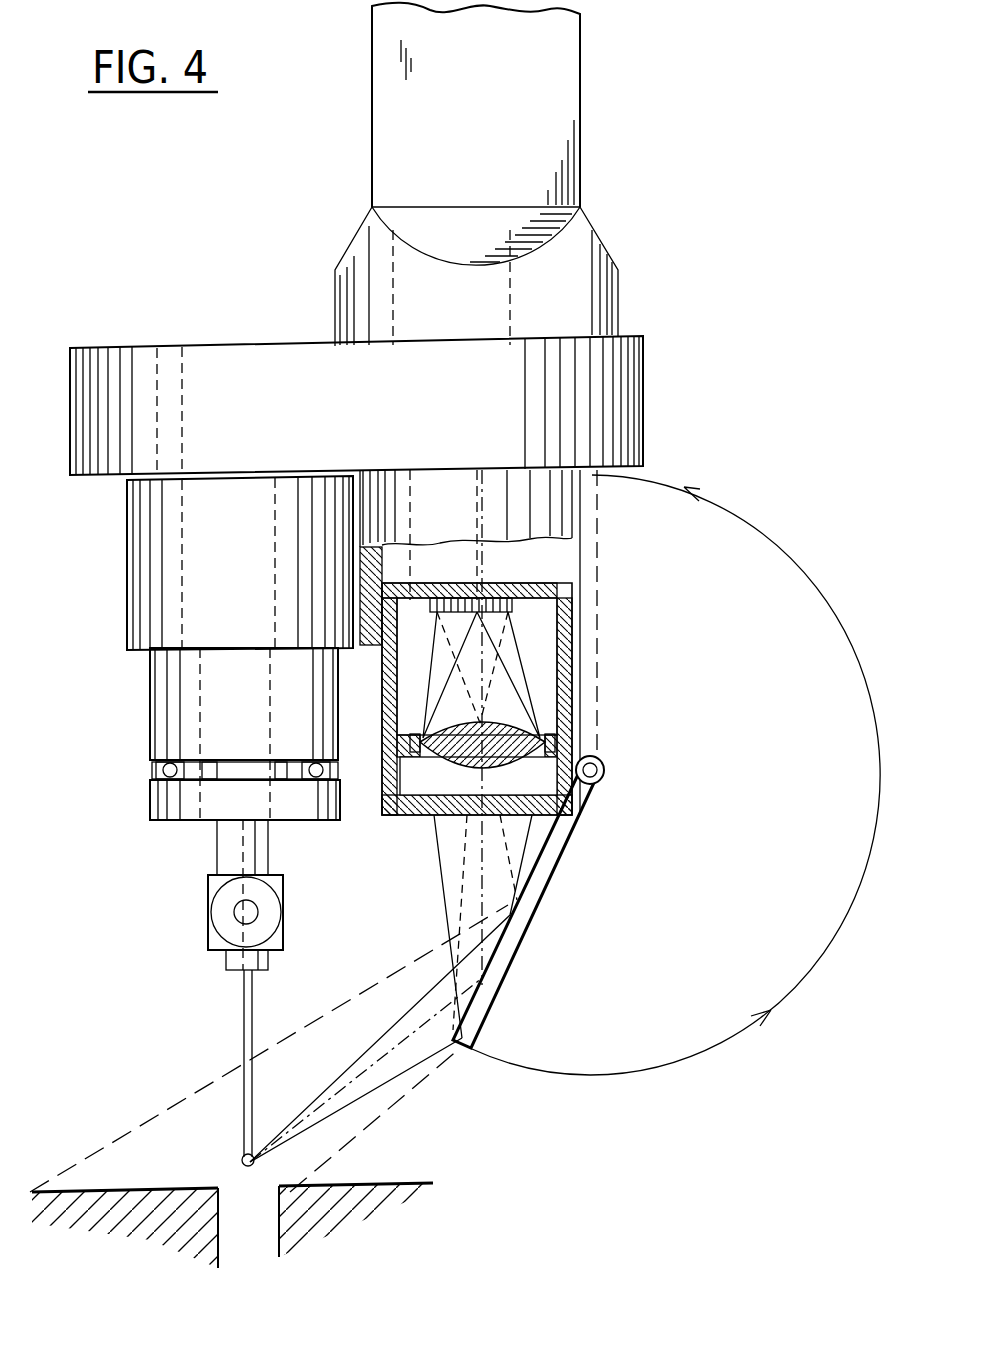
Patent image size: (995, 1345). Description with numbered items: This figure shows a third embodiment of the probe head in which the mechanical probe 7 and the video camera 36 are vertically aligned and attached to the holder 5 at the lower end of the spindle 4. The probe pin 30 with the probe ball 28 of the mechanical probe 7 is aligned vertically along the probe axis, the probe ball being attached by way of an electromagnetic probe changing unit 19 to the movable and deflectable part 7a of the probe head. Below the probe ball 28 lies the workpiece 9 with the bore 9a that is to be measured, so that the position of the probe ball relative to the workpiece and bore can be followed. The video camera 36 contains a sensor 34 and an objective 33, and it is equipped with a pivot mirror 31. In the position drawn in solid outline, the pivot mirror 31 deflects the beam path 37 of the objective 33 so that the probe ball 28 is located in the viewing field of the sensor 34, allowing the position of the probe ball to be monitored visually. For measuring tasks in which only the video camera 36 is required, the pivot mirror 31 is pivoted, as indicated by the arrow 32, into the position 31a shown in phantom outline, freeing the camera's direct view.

The spindle 4 is at (565, 93).
The holder 5 is at (628, 380).
The mechanical probe 7 is at (132, 550).
The movable and deflectable part of the probe head 7a is at (152, 712).
The electromagnetic probe changing unit 19 is at (175, 822).
The probe pin 30 is at (243, 1017).
The probe ball 28 is at (244, 1158).
The workpiece 9 is at (414, 1183).
The bore 9a is at (222, 1196).
The pivot mirror 31 is at (557, 848).
The pivoted-away position of the pivot mirror 31a is at (596, 520).
The arrow 32 is at (826, 950).
The objective 33 is at (517, 720).
The sensor 34 is at (512, 604).
The video camera 36 is at (570, 684).
The light beam 37 is at (403, 1090).